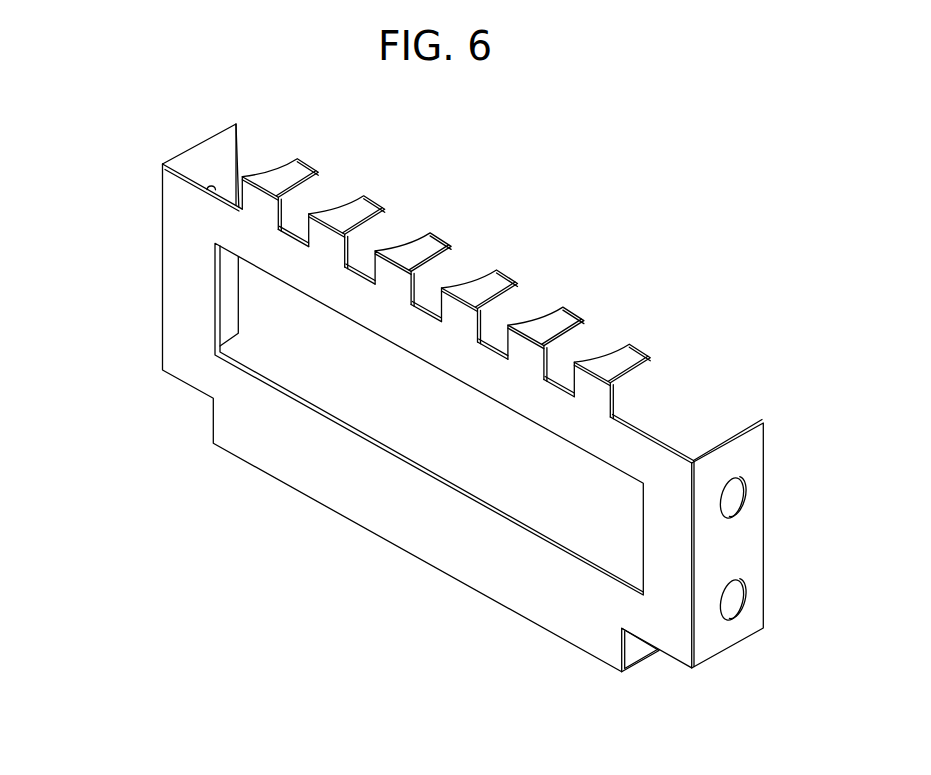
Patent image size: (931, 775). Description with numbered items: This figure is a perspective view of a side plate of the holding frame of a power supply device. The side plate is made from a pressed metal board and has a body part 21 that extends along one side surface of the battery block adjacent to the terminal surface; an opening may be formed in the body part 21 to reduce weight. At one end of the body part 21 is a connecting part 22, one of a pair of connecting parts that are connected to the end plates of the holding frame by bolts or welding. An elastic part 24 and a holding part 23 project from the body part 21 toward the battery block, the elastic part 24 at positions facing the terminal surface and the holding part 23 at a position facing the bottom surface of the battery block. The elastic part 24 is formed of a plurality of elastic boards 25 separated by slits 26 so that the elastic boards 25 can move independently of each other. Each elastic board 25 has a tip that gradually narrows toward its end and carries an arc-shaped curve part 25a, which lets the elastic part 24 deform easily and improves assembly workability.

The body part 21 is at (188, 318).
The connecting part 22 is at (746, 545).
The holding part 23 is at (645, 658).
The elastic part 24 is at (479, 289).
The elastic board 25 is at (555, 320).
The curve part 25a is at (632, 345).
The slit 26 is at (457, 270).